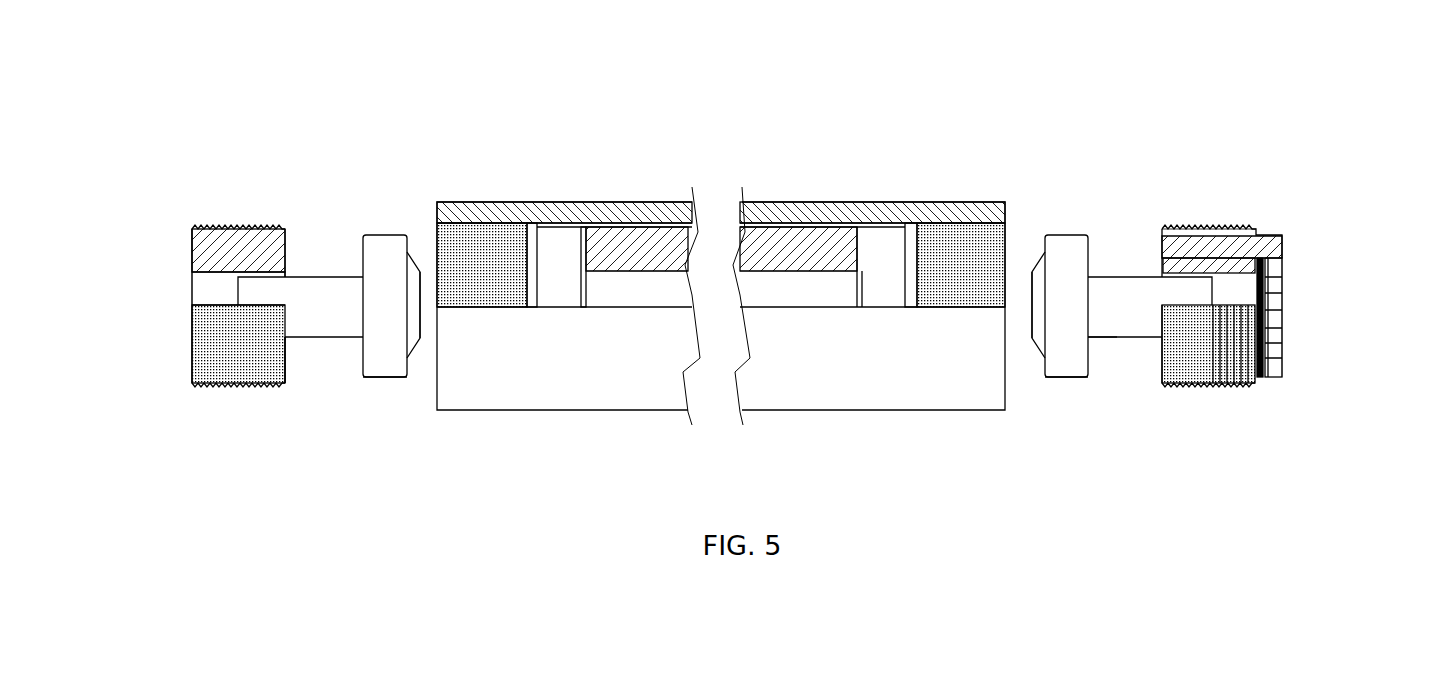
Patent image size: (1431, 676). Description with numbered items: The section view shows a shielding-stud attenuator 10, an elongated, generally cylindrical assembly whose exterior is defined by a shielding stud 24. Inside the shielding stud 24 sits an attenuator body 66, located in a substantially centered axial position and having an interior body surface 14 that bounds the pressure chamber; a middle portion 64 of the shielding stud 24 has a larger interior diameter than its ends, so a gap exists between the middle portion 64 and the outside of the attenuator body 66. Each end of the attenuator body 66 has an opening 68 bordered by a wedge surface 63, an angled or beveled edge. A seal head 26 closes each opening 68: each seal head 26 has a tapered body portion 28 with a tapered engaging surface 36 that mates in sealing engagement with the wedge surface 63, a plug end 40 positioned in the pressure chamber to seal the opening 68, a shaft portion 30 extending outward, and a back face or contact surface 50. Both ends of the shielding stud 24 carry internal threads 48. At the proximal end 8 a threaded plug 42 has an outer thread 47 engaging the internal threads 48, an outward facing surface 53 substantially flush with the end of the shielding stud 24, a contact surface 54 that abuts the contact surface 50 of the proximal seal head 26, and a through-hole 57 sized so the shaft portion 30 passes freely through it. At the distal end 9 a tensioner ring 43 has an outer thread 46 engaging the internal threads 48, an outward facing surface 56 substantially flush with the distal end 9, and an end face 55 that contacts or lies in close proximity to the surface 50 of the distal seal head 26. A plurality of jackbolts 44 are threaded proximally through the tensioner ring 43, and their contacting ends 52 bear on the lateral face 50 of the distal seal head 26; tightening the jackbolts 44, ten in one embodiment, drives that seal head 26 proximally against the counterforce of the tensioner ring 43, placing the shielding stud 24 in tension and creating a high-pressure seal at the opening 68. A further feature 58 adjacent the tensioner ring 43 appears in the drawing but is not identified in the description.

The proximal end 8 is at (110, 285).
The distal end 9 is at (1364, 295).
The shielding-stud attenuator 10 is at (470, 88).
The interior body surface 14 is at (660, 287).
The shielding stud 24 is at (827, 410).
The seal head 26 is at (330, 268).
The tapered body portion 28 is at (387, 248).
The shaft portion 30 is at (1117, 338).
The tapered engaging surface 36 is at (413, 263).
The plug end 40 is at (433, 340).
The threaded plug 42 is at (180, 230).
The tensioner ring 43 is at (1243, 216).
The jackbolts 44 is at (1284, 263).
The outer thread 46 is at (1213, 368).
The outer thread 47 is at (237, 388).
The internal threads 48 is at (460, 222).
The back face 50 is at (363, 360).
The contacting ends 52 is at (1160, 247).
The outward facing surface 53 is at (195, 340).
The contact surface 54 is at (283, 366).
The end face 55 is at (1163, 388).
The outward facing surface 56 is at (1257, 381).
The through-hole 57 is at (208, 290).
The seal 58 is at (1236, 273).
The wedge surface 63 is at (583, 293).
The middle portion 64 is at (780, 222).
The attenuator body 66 is at (672, 230).
The opening 68 is at (596, 281).